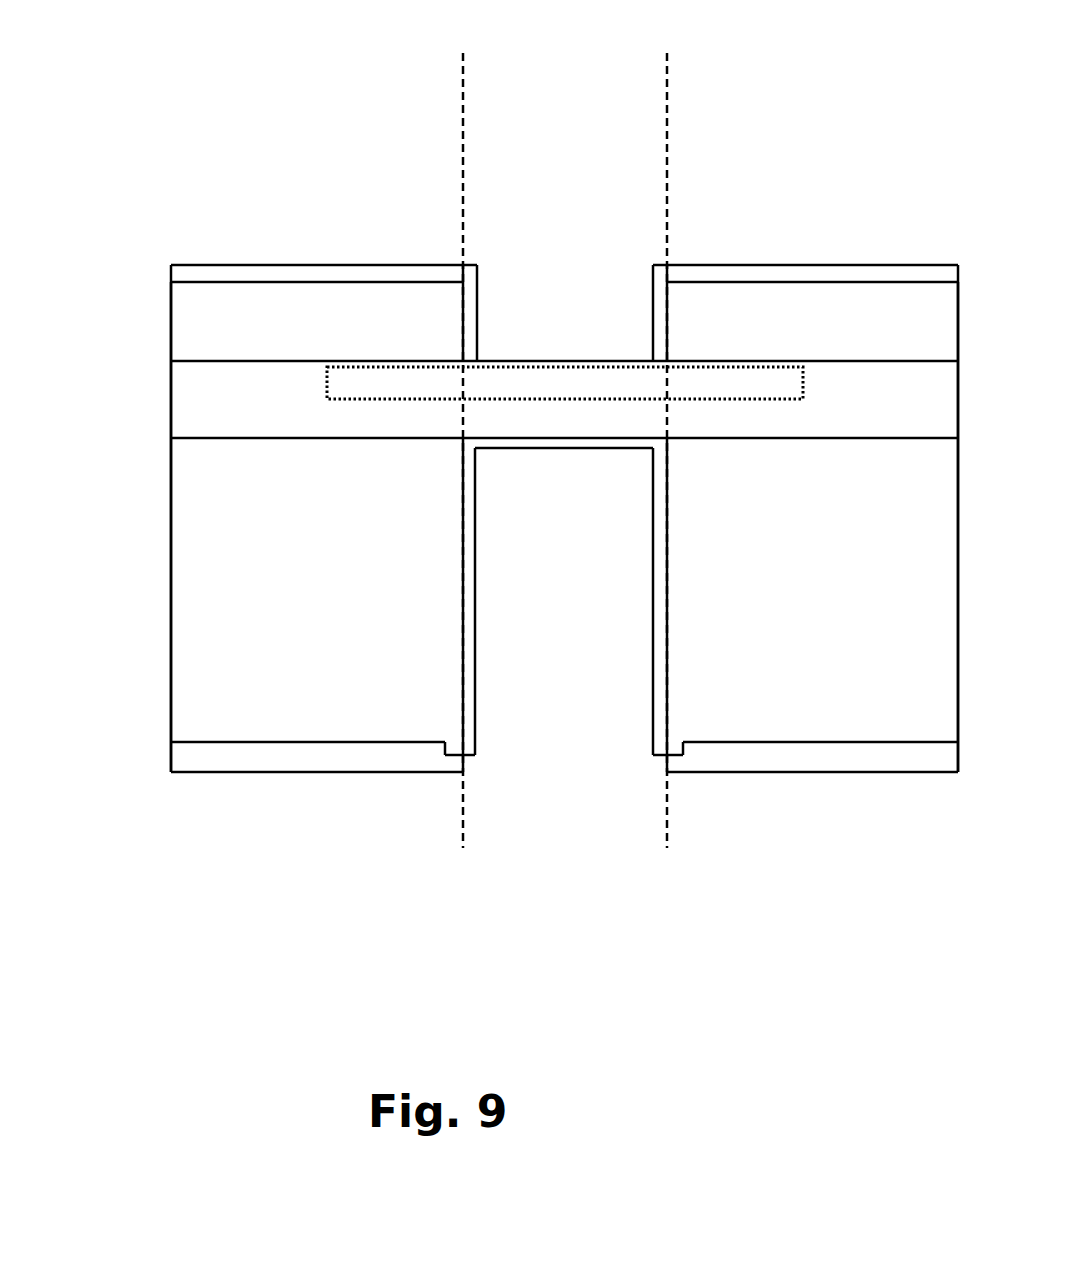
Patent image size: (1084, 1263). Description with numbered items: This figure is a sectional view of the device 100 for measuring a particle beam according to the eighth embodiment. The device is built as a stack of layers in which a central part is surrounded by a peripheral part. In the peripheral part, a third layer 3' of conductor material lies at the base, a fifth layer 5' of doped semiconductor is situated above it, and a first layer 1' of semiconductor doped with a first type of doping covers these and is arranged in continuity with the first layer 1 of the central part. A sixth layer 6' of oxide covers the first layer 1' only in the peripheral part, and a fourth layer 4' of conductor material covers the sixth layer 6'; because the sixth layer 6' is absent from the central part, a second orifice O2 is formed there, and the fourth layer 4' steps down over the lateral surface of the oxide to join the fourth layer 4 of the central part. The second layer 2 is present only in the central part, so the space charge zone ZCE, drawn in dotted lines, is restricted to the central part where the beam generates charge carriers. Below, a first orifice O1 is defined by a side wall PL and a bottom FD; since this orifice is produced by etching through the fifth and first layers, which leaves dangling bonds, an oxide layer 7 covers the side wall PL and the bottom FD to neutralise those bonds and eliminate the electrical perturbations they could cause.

The device for measuring a particle beam 100 is at (121, 51).
The fourth layer of the peripheral part 4' is at (564, 171).
The fourth layer of the central part 4 is at (565, 213).
The sixth layer 6' is at (500, 304).
The first layer of the peripheral part 1' is at (500, 377).
The first layer of the central part 1 is at (564, 332).
The second layer 2 is at (575, 361).
The fifth layer 5' is at (500, 596).
The third layer 3' is at (564, 853).
The oxide layer 7 is at (470, 750).
The space charge zone ZCE is at (590, 383).
The bottom of the first orifice FD is at (628, 470).
The side wall of the first orifice PL is at (500, 648).
The first orifice O1 is at (606, 840).
The second orifice O2 is at (637, 156).